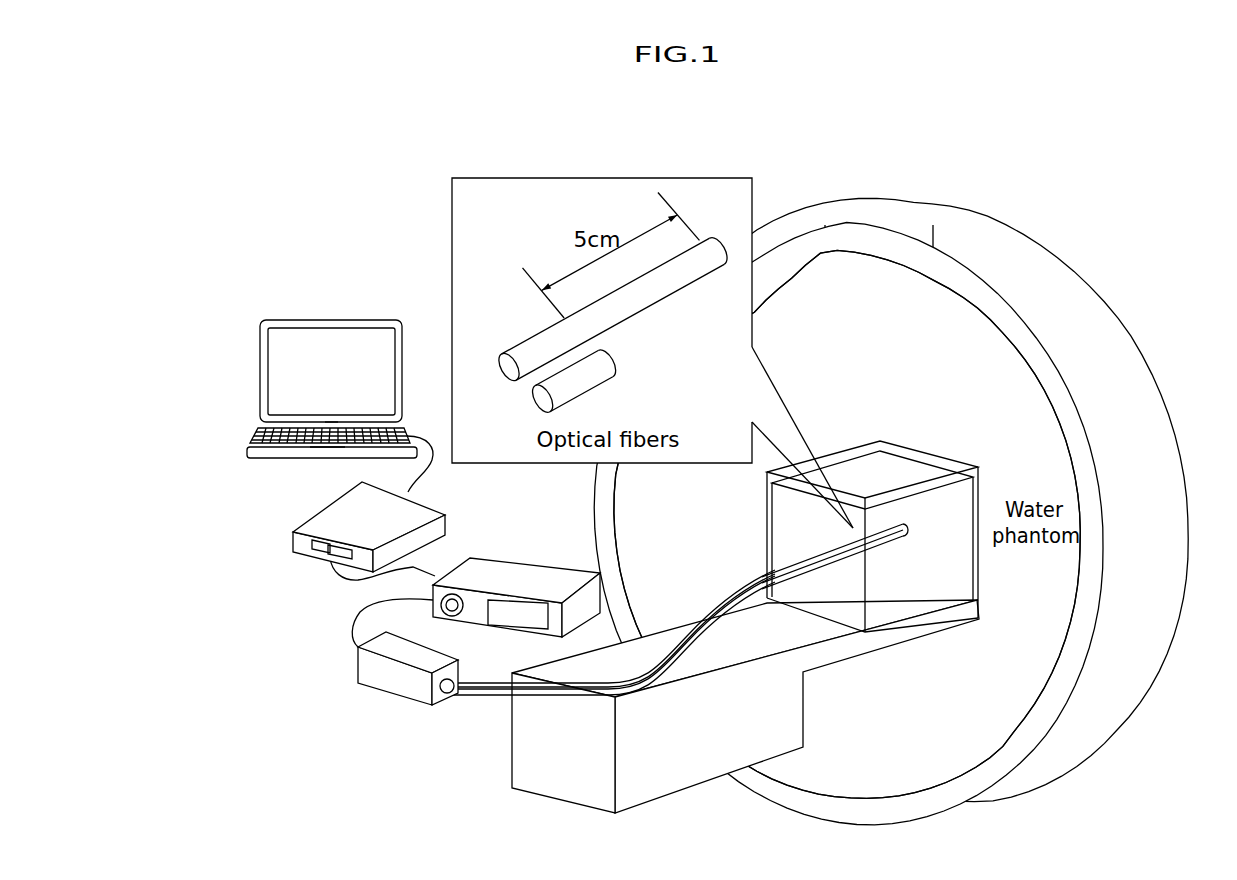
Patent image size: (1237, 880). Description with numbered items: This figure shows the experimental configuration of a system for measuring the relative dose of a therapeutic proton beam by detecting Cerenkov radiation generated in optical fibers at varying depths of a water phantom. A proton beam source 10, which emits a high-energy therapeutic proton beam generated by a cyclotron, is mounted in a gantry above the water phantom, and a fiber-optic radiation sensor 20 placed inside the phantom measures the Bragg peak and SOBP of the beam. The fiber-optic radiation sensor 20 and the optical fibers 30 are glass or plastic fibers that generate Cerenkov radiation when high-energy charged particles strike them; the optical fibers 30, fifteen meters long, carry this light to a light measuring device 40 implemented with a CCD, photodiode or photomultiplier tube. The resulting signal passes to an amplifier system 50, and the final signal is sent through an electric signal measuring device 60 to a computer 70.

The proton beam source 10 is at (905, 350).
The fiber-optic radiation sensor 20 is at (870, 550).
The optical fibers 30 is at (693, 657).
The light measuring device 40 is at (393, 687).
The amplifier system 50 is at (535, 567).
The electric signal measuring device 60 is at (307, 558).
The computer 70 is at (328, 318).